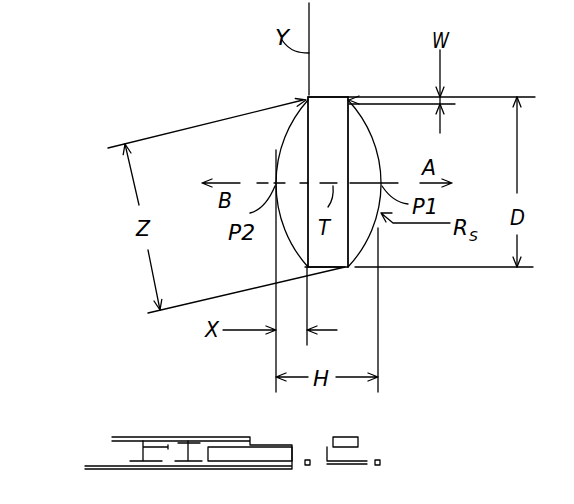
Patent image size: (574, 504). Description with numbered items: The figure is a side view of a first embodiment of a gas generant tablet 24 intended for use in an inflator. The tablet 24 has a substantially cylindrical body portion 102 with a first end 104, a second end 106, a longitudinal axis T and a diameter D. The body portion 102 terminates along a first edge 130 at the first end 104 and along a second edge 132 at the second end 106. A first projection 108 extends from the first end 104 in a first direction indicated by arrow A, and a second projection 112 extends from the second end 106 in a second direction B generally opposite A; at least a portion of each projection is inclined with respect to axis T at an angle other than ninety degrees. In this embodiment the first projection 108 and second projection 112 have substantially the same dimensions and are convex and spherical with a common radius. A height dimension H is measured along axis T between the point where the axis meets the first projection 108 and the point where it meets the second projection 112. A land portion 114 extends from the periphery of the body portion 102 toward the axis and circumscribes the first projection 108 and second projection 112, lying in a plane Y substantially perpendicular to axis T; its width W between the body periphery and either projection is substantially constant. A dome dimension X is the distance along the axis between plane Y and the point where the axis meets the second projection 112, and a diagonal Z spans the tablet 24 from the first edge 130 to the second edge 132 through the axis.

The gas generant tablet 24 is at (344, 208).
The body portion 102 is at (330, 250).
The first end 104 is at (348, 269).
The second end 106 is at (308, 267).
The first projection 108 is at (363, 143).
The second projection 112 is at (287, 170).
The land portion 114 is at (303, 100).
The first edge 130 is at (348, 122).
The second edge 132 is at (308, 148).